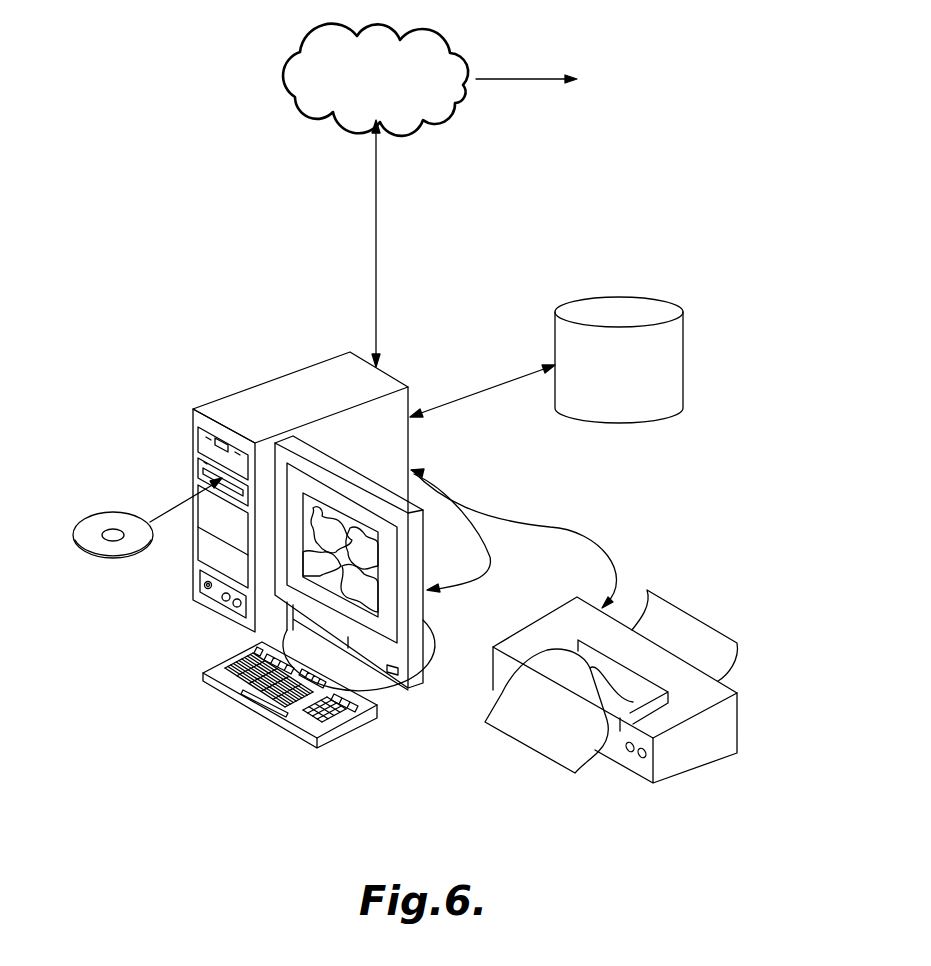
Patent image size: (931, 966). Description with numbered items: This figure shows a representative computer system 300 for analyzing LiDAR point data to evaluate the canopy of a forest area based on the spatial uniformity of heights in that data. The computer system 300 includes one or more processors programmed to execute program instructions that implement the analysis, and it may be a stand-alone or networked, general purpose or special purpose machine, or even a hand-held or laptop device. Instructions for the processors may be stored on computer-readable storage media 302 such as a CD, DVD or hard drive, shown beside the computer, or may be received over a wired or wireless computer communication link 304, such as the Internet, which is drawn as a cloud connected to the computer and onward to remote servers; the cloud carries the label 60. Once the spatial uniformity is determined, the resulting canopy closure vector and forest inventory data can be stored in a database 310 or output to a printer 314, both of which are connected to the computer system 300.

The Internet 60 is at (465, 52).
The computer system 300 is at (260, 386).
The computer-readable storage media 302 is at (90, 525).
The computer communication link 304 is at (377, 246).
The database 310 is at (673, 300).
The printer 314 is at (725, 688).